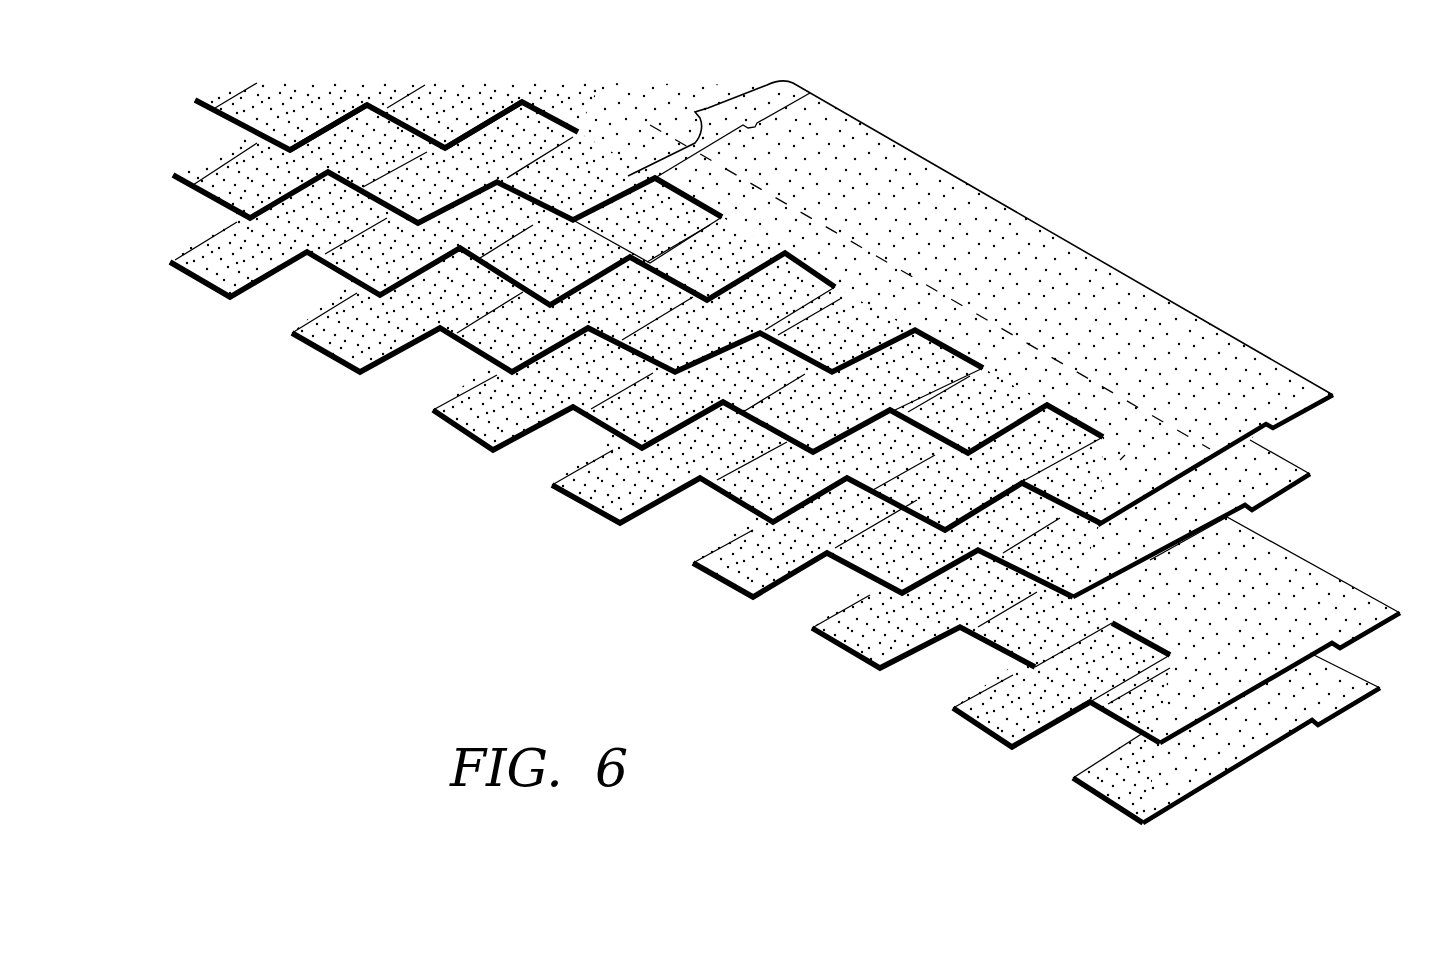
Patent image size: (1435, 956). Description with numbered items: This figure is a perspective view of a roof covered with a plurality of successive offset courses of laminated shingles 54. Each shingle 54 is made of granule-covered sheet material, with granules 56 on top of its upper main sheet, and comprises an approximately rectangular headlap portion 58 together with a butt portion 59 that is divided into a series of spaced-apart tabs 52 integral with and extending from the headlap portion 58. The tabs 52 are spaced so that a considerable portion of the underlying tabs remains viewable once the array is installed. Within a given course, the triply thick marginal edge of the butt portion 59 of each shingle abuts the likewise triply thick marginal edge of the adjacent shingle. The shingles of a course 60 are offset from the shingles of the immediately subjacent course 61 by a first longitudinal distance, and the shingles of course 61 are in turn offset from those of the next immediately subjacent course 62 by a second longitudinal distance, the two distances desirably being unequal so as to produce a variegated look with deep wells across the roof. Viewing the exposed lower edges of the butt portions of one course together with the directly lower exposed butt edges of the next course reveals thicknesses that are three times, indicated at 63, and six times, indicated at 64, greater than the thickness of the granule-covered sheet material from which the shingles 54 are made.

The tabs 52 is at (232, 257).
The shingle 54 is at (1160, 295).
The granules 56 is at (920, 215).
The headlap portion 58 is at (929, 266).
The butt portion 59 is at (655, 178).
The course 60 is at (1120, 460).
The subjacent course 61 is at (1050, 553).
The next immediately subjacent course 62 is at (1157, 688).
The three-times thickness 63 is at (510, 148).
The six-times thickness 64 is at (398, 138).